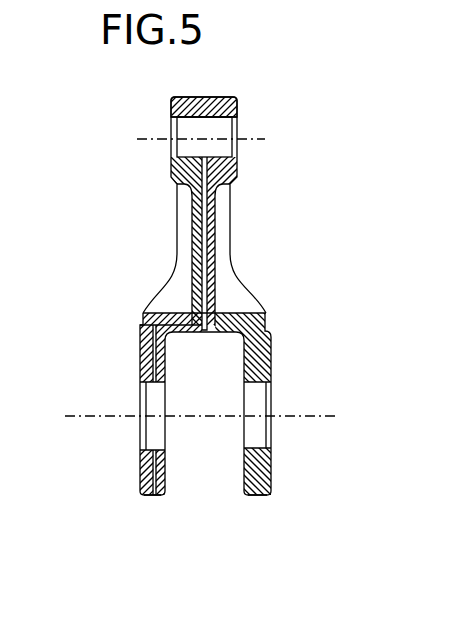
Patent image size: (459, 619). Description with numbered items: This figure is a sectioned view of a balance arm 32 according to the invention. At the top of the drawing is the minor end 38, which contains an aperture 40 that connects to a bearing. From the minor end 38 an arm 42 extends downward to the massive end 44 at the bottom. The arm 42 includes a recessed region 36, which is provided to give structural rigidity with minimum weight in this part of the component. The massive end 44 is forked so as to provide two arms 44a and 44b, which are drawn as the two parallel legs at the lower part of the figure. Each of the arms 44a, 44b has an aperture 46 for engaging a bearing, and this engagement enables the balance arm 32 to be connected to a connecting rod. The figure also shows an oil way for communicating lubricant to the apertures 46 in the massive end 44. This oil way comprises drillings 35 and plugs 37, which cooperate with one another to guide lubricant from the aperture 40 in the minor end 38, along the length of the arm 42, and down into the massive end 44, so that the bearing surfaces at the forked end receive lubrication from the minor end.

The balance arm 32 is at (128, 262).
The drillings 35 is at (191, 228).
The recessed region 36 is at (218, 236).
The plugs 37 is at (146, 321).
The minor end 38 is at (258, 91).
The aperture 40 is at (254, 150).
The arm 42 is at (208, 287).
The massive end 44 is at (202, 497).
The arm 44a is at (128, 470).
The arm 44b is at (285, 470).
The aperture 46 is at (125, 403).